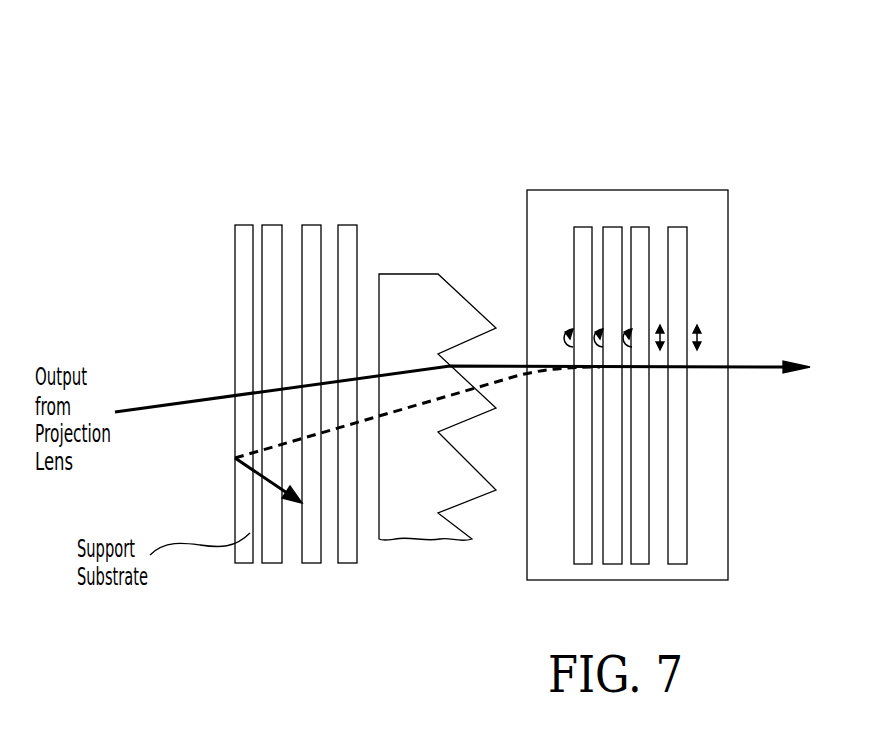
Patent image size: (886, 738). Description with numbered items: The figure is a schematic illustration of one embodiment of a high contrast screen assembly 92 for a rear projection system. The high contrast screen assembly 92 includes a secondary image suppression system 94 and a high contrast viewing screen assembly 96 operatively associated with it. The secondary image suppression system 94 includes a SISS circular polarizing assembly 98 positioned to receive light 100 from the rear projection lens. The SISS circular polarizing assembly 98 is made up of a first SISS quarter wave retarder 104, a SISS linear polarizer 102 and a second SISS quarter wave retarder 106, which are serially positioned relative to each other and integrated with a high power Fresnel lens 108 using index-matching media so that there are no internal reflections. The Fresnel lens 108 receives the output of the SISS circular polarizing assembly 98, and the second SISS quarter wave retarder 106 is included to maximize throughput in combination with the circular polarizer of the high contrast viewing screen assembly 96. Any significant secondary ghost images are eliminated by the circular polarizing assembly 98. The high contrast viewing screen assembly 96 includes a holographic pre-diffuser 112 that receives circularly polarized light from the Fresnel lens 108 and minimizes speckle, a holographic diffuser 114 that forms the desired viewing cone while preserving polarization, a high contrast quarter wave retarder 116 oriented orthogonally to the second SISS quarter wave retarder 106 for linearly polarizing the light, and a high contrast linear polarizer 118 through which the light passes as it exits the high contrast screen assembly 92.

The high contrast screen assembly 92 is at (375, 635).
The secondary image suppression system 94 is at (320, 297).
The high contrast viewing screen assembly 96 is at (728, 203).
The SISS circular polarizing assembly 98 is at (292, 436).
The light 100 is at (162, 400).
The SISS linear polarizer 102 is at (313, 230).
The first SISS quarter wave retarder 104 is at (273, 230).
The second SISS quarter wave retarder 106 is at (348, 230).
The Fresnel lens 108 is at (423, 288).
The holographic pre-diffuser 112 is at (583, 235).
The holographic diffuser 114 is at (612, 237).
The high contrast quarter wave retarder 116 is at (641, 240).
The high contrast linear polarizer 118 is at (677, 250).